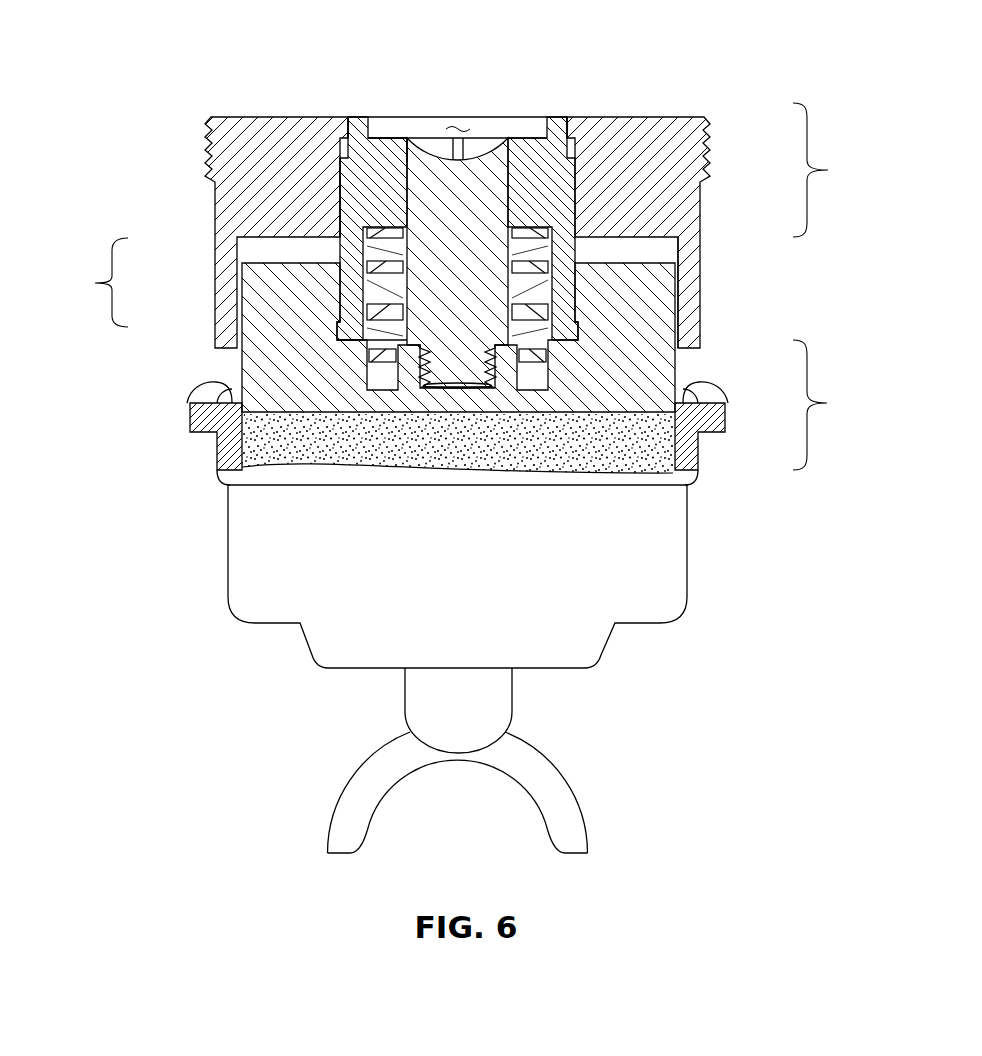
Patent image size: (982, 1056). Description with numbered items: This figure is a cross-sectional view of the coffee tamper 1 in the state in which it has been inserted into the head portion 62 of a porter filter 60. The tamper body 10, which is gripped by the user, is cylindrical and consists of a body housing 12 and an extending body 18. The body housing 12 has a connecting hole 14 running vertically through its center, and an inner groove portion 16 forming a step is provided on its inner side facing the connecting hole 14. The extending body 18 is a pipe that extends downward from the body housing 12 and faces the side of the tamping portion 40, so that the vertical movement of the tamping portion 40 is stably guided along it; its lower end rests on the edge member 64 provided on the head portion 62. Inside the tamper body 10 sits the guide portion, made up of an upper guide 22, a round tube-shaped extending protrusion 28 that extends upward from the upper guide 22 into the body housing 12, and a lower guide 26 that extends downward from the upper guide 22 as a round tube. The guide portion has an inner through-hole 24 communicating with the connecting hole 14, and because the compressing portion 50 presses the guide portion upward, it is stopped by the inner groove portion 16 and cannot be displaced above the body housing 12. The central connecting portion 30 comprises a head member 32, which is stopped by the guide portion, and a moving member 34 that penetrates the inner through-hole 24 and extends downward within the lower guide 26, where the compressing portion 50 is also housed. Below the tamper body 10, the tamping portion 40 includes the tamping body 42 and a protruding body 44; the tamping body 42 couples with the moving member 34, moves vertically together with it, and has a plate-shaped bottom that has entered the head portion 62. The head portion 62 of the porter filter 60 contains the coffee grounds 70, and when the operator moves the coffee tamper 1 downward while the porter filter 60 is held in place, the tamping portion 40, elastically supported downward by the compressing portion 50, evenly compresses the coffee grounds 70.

The coffee tamper 1 is at (126, 72).
The tamper body 10 is at (830, 170).
The body housing 12 is at (687, 150).
The connecting hole 14 is at (347, 140).
The inner groove portion 16 is at (570, 152).
The extending body 18 is at (693, 310).
The upper guide 22 is at (363, 135).
The inner through-hole 24 is at (458, 126).
The lower guide 26 is at (506, 255).
The extending protrusion 28 is at (353, 140).
The central connecting portion 30 is at (92, 282).
The head member 32 is at (358, 165).
The moving member 34 is at (445, 290).
The tamping portion 40 is at (829, 405).
The tamping body 42 is at (692, 455).
The protruding body 44 is at (648, 290).
The compressing portion 50 is at (365, 325).
The porter filter 60 is at (205, 593).
The head portion 62 is at (690, 479).
The edge member 64 is at (190, 401).
The coffee grounds 70 is at (598, 400).